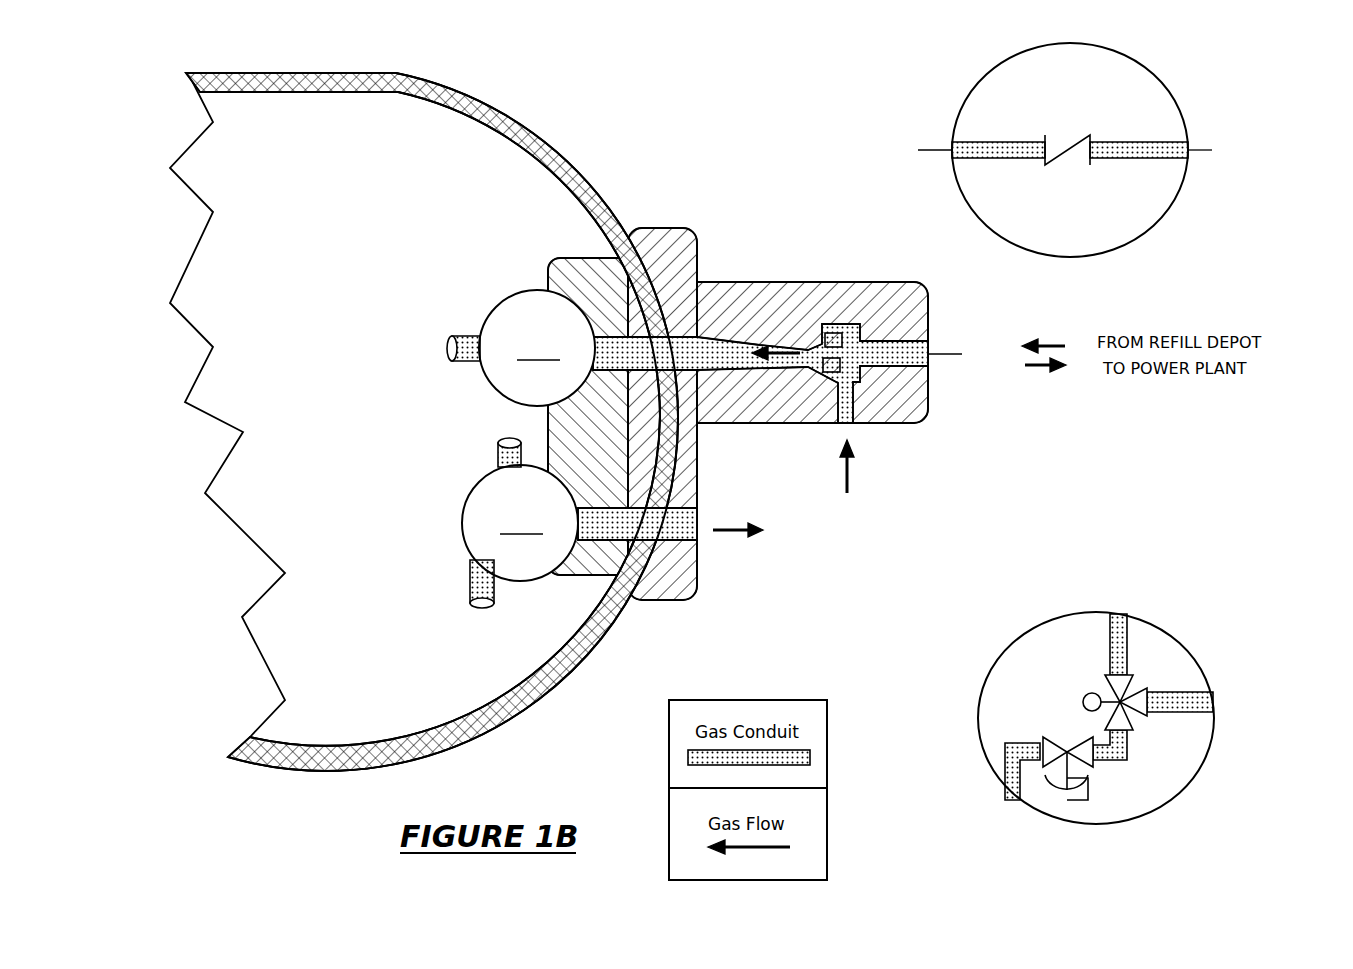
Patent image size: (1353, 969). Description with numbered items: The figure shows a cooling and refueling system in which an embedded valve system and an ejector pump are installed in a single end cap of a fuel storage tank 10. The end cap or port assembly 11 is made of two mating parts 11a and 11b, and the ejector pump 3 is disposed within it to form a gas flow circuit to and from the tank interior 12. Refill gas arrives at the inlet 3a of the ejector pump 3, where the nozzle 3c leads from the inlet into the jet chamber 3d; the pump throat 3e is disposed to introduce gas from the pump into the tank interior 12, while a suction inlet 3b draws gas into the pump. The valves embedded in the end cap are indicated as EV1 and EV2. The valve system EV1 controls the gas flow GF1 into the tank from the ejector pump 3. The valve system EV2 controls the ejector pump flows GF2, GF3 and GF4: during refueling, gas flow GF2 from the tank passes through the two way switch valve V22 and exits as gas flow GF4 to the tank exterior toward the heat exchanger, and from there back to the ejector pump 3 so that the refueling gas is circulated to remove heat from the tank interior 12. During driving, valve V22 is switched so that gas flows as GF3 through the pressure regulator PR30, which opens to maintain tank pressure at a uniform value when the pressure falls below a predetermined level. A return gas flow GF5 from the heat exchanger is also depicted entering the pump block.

The fuel storage tank 10 is at (490, 113).
The port assembly 11 is at (609, 371).
The mating part 11a is at (678, 228).
The mating part 11b is at (572, 257).
The tank interior 12 is at (283, 249).
The ejector pump 3 is at (794, 337).
The inlet 3a is at (962, 355).
The suction inlet 3b is at (842, 418).
The nozzle 3c is at (817, 357).
The jet chamber 3d is at (778, 347).
The pump throat 3e is at (723, 352).
The gas flow GF1 is at (448, 342).
The gas flow GF2 is at (505, 447).
The gas flow GF3 is at (476, 607).
The gas flow GF4 is at (700, 525).
The gas flow GF5 is at (850, 422).
The valve system EV1 is at (1063, 104).
The valve system EV2 is at (1163, 793).
The two way switch valve V22 is at (1085, 697).
The pressure regulator PR30 is at (1090, 800).